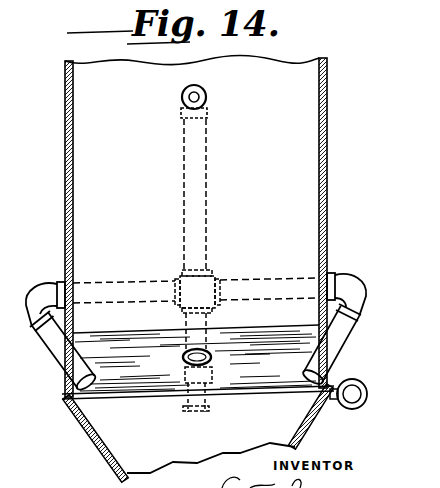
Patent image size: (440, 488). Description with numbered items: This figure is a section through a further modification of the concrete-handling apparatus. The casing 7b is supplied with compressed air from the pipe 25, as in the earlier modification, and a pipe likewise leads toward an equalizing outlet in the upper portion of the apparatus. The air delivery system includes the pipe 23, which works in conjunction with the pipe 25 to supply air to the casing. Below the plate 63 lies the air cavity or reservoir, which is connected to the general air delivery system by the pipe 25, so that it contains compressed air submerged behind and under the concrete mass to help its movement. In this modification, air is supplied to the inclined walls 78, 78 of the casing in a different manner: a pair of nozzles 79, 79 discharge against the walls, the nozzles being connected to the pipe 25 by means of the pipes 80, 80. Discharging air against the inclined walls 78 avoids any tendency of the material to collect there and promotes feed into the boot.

The casing 7b is at (65, 202).
The pipe 23 is at (183, 213).
The pipes 80 is at (115, 282).
The plate 63 is at (153, 337).
The pipe 25 is at (193, 408).
The nozzles 79 is at (47, 343).
The inclined walls 78 is at (82, 425).